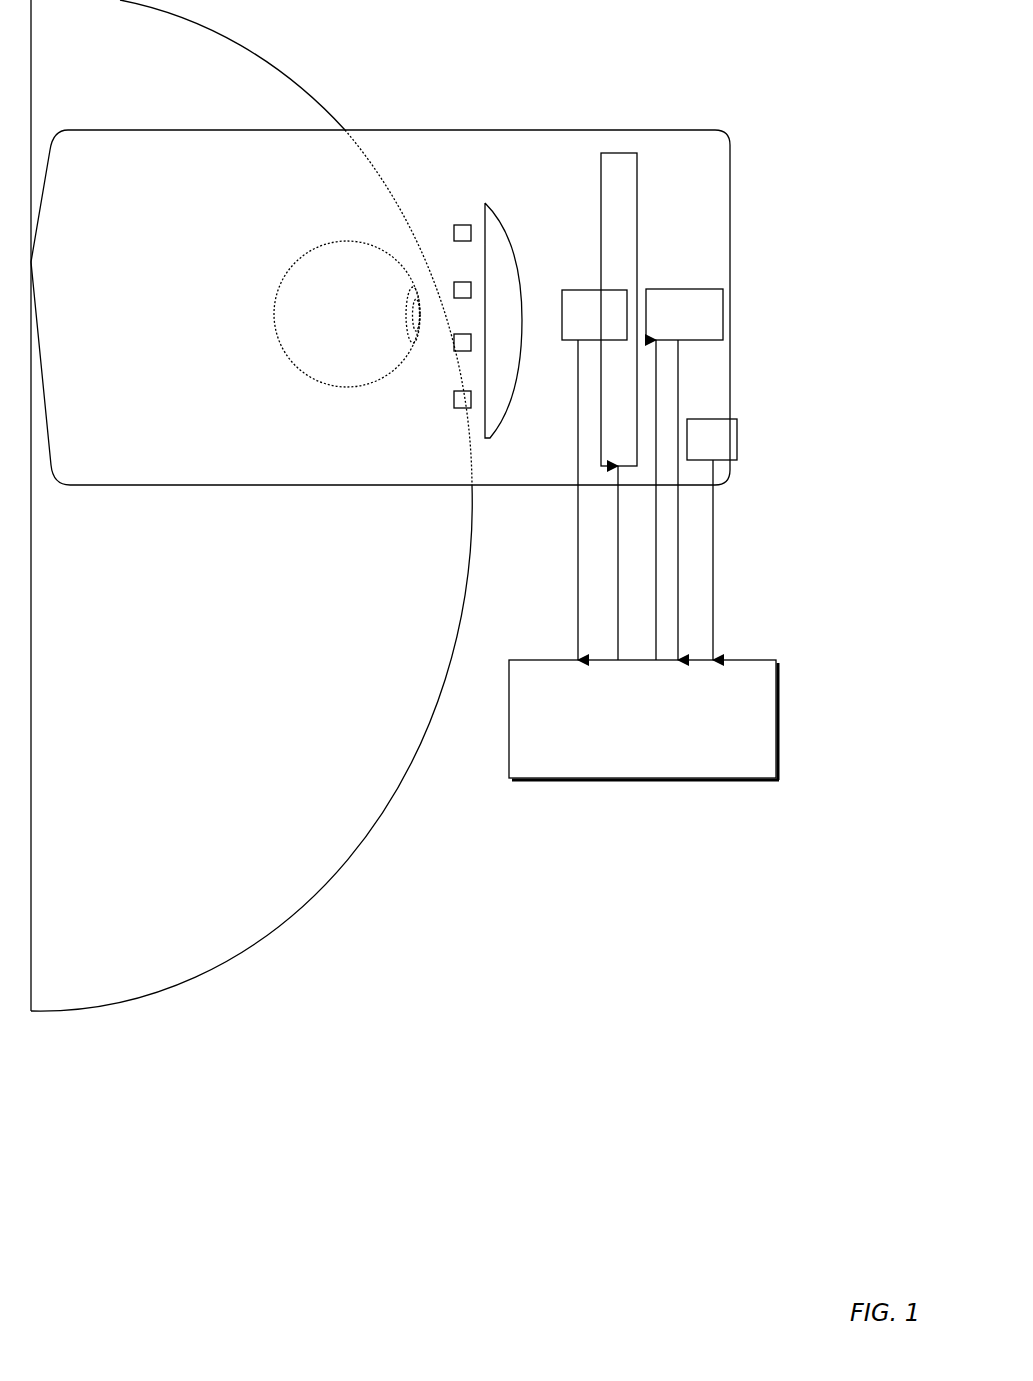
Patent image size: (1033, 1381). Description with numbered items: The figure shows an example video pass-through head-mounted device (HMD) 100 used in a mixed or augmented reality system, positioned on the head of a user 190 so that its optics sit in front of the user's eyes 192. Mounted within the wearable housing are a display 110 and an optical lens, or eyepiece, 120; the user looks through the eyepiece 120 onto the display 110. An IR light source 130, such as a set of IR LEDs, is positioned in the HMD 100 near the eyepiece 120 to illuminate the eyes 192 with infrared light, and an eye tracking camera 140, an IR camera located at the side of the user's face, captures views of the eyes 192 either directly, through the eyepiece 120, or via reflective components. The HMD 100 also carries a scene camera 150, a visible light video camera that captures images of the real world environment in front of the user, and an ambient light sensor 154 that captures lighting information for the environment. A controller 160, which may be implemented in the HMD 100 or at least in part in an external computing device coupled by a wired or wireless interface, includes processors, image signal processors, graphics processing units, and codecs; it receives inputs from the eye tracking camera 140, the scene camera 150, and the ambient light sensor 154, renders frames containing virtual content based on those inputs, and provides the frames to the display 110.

The user 190 is at (251, 505).
The head-mounted device 100 is at (380, 307).
The eyes 192 is at (347, 314).
The display 110 is at (618, 190).
The optical lens (eyepiece) 120 is at (518, 266).
The IR light source 130 is at (453, 236).
The eye tracking camera 140 is at (594, 475).
The scene camera 150 is at (684, 474).
The ambient light sensor 154 is at (712, 539).
The controller 160 is at (644, 623).